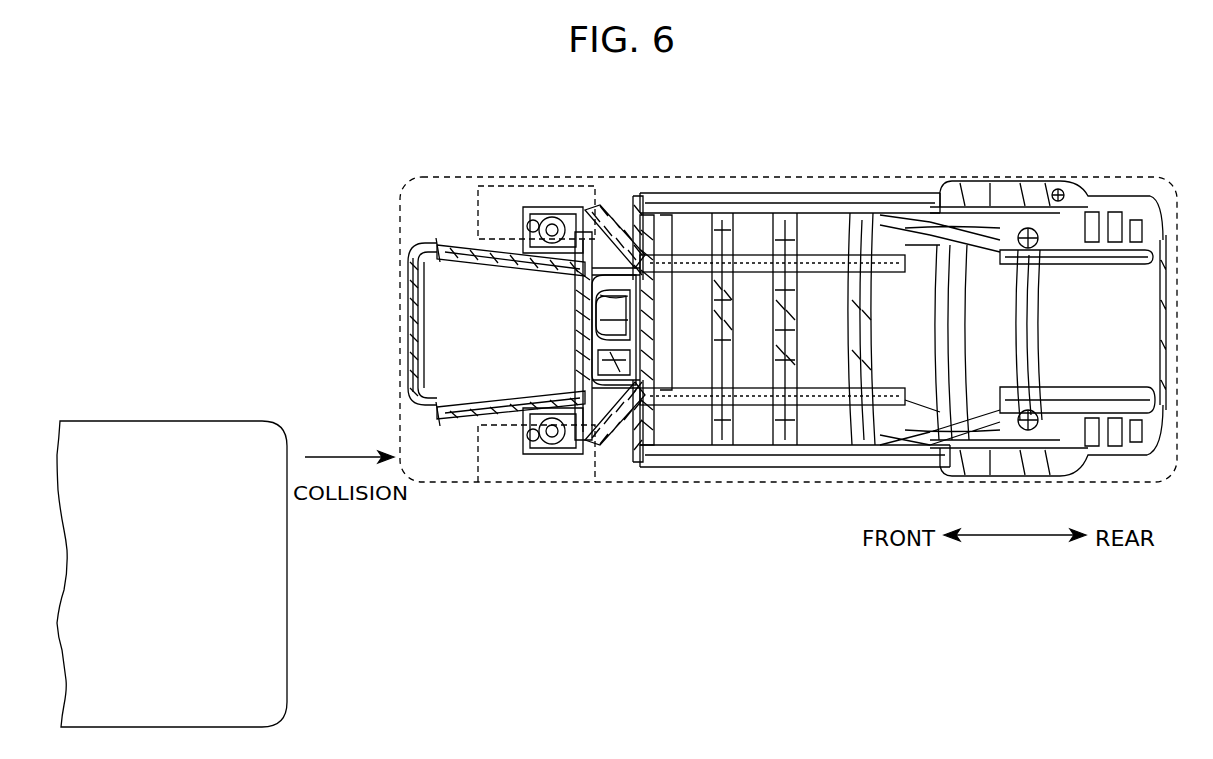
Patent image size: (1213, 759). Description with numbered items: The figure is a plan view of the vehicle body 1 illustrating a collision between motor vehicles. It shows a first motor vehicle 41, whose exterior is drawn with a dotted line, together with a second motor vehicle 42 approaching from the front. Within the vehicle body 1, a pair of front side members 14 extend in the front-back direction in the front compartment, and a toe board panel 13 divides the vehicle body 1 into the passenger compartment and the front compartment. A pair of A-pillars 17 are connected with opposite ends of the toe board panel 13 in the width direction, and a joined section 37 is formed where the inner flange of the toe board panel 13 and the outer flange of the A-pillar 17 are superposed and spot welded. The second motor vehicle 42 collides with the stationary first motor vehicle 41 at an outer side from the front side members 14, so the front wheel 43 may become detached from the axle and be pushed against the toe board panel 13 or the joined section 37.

The vehicle body 1 is at (788, 400).
The first motor vehicle 41 is at (790, 520).
The toe board panel 13 is at (578, 335).
The front side members 14 is at (456, 242).
The A-pillar 17 is at (638, 196).
The joined section 37 is at (630, 205).
The second motor vehicle 42 is at (304, 648).
The front wheel 43 is at (500, 200).